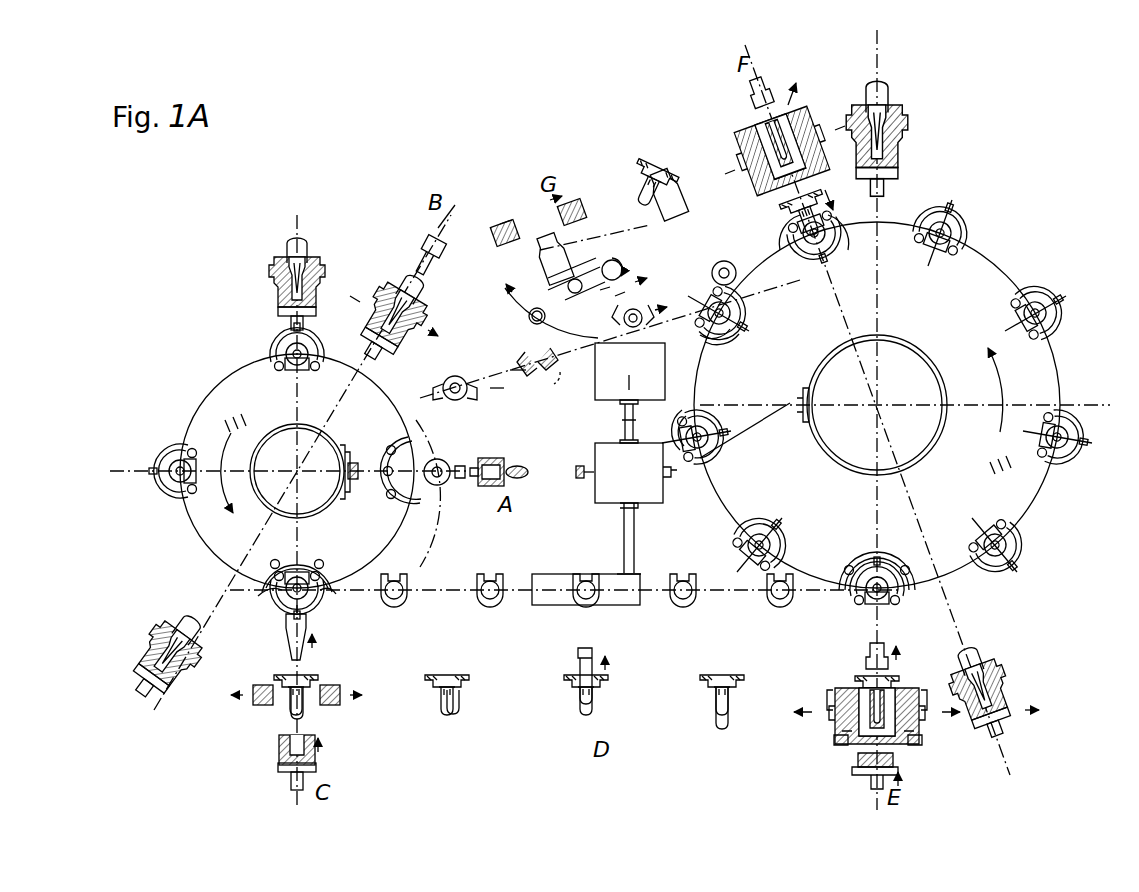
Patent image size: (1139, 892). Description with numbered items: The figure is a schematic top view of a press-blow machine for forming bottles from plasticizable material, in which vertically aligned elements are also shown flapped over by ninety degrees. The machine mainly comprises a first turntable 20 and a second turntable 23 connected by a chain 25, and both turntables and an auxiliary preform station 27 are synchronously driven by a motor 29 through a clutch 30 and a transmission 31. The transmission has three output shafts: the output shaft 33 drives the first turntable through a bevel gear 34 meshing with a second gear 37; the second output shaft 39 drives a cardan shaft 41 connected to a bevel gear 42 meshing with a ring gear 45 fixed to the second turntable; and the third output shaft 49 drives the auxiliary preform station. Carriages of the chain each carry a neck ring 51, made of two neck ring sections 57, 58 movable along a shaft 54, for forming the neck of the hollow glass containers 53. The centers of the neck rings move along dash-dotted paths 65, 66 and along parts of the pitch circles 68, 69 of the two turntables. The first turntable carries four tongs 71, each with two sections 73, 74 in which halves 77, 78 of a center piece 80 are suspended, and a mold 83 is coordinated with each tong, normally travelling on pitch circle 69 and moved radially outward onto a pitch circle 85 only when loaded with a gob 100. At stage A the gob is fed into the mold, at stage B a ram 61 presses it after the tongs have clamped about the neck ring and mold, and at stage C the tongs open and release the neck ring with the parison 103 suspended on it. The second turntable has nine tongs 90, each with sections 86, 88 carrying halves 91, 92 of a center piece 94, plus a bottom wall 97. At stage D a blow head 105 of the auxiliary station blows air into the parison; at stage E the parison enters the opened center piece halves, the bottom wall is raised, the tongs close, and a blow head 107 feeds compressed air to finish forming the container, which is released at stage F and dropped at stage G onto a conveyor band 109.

The first turntable 20 is at (188, 540).
The second turntable 23 is at (1062, 372).
The chain 25 is at (430, 598).
The auxiliary preform station 27 is at (620, 605).
The motor 29 is at (665, 358).
The clutch 30 is at (614, 413).
The transmission 31 is at (662, 496).
The output shaft 33 is at (354, 462).
The bevel gear 34 is at (345, 485).
The second gear 37 is at (322, 505).
The second output shaft 39 is at (674, 476).
The cardan shaft 41 is at (752, 430).
The bevel gear 42 is at (800, 420).
The ring gear 45 is at (925, 455).
The third output shaft 49 is at (634, 525).
The neck ring 51 is at (496, 604).
The hollow glass container 53 is at (568, 238).
The shaft 54 is at (568, 384).
The neck ring section 57 is at (518, 360).
The neck ring section 58 is at (558, 356).
The ram 61 is at (427, 258).
The path 65 is at (740, 600).
The path 66 is at (488, 392).
The pitch circle 68 is at (1042, 518).
The pitch circle 69 is at (222, 370).
The tongs 71 is at (385, 462).
The tong section 73 is at (262, 592).
The tong section 74 is at (330, 592).
The center piece half 77 is at (253, 703).
The center piece half 78 is at (340, 705).
The center piece 80 is at (342, 682).
The mold 83 is at (368, 318).
The pitch circle 85 is at (438, 517).
The tong section 86 is at (722, 348).
The tong section 88 is at (745, 298).
The tongs 90 is at (738, 340).
The center piece half 91 is at (712, 465).
The center piece half 92 is at (712, 420).
The center piece 94 is at (1003, 692).
The bottom wall 97 is at (748, 545).
The gob 100 is at (392, 338).
The parison 103 is at (305, 702).
The blow head 105 is at (578, 662).
The blow head 107 is at (752, 107).
The conveyor band 109 is at (609, 279).